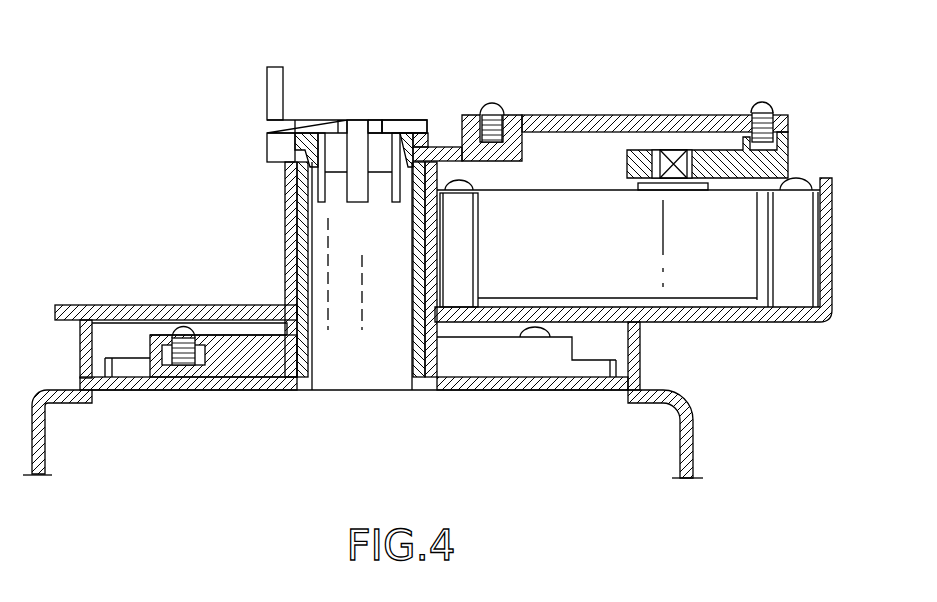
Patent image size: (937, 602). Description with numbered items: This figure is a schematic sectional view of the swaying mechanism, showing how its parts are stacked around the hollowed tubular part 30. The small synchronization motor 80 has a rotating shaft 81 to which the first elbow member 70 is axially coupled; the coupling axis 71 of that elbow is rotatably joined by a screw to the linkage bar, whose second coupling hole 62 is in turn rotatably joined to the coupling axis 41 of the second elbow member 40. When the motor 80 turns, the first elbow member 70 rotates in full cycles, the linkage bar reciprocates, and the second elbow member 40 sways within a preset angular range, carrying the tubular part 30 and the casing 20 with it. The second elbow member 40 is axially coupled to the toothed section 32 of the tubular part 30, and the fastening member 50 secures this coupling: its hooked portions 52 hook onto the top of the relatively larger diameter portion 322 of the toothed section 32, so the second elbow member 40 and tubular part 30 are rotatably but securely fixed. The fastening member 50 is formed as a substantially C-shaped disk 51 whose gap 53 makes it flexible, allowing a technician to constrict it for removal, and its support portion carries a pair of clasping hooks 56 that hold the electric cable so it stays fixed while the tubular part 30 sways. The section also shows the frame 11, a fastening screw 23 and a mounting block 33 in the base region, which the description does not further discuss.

The frame 11 is at (290, 232).
The casing 20 is at (693, 427).
The screw 23 is at (183, 365).
The hollowed tubular part 30 is at (307, 278).
The toothed section 32 is at (308, 155).
The relatively larger diameter portion 322 is at (425, 157).
The mounting block 33 is at (258, 400).
The second elbow member 40 is at (497, 163).
The coupling axis 41 is at (508, 117).
The fastening member 50 is at (315, 125).
The C-shaped disk 51 is at (428, 120).
The hooked portions 52 is at (318, 181).
The gap 53 is at (375, 127).
The clasping hooks 56 is at (270, 76).
The second coupling hole 62 is at (488, 106).
The first elbow member 70 is at (787, 158).
The coupling axis 71 is at (787, 127).
The synchronization motor 80 is at (757, 242).
The rotating shaft 81 is at (668, 148).